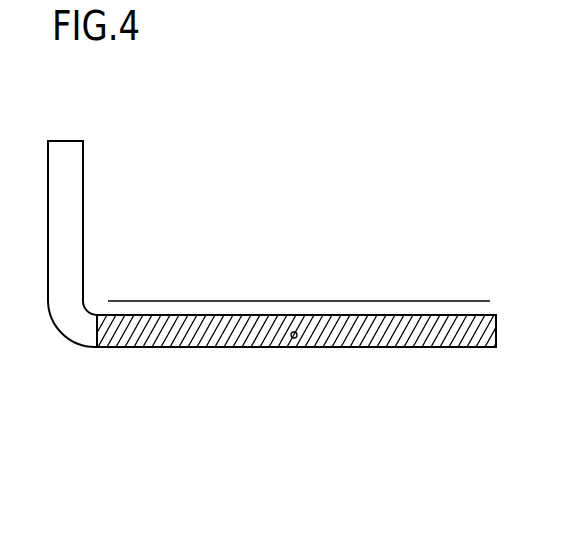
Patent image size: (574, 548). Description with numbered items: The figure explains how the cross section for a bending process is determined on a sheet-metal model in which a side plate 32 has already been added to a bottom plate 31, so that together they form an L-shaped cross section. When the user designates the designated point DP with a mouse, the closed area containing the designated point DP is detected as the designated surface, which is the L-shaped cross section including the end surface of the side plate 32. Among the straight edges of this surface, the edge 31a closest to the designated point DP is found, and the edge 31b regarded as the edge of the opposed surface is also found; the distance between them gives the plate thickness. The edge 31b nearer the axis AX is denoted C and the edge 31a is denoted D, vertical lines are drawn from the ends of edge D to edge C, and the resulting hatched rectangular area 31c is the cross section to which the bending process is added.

The bottom plate 31 is at (296, 334).
The edge 31a is at (255, 347).
The edge 31b is at (262, 315).
The cross section 31c is at (373, 333).
The side plate 32 is at (85, 185).
The axis AX is at (318, 301).
The designated point DP is at (294, 338).